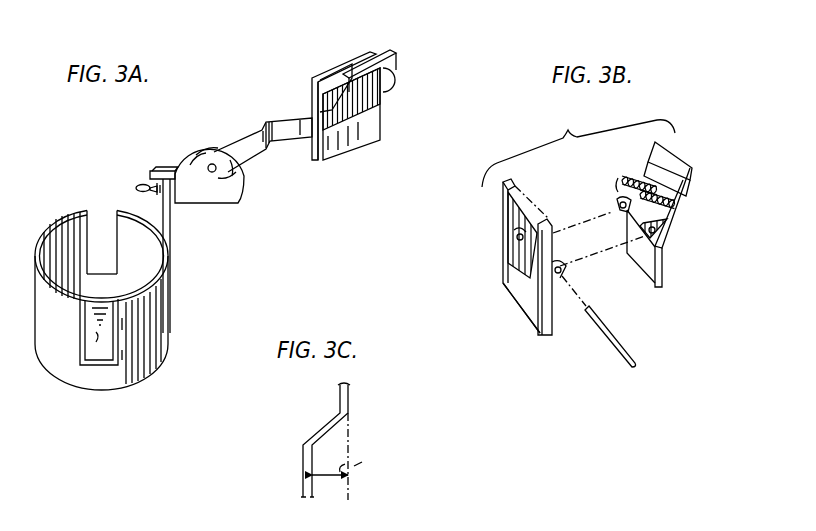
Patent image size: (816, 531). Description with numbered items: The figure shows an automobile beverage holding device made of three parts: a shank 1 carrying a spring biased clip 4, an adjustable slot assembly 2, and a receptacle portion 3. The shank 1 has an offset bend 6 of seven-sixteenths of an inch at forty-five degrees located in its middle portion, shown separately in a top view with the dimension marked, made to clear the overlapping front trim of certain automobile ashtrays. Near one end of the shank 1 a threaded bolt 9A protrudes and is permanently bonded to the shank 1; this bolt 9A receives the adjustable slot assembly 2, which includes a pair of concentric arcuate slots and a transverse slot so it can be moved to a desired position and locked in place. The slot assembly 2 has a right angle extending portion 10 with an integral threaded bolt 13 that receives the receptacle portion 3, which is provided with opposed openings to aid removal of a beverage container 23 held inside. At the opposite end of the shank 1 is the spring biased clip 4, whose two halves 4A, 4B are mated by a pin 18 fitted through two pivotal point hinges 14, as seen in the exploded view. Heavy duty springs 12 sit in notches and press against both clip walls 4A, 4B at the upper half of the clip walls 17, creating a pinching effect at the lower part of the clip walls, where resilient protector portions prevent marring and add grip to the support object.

In FIG. 3A, the shank 1 is at (298, 136).
In FIG. 3C, the shank 1 is at (350, 411).
In FIG. 3A, the adjustable slot assembly 2 is at (222, 202).
In FIG. 3A, the receptacle portion 3 is at (166, 333).
In FIG. 3A, the spring biased clip 4 is at (366, 122).
In FIG. 3A, the clip half 4A is at (357, 71).
In FIG. 3B, the clip half 4A is at (668, 150).
In FIG. 3A, the clip half 4B is at (320, 80).
In FIG. 3B, the clip half 4B is at (503, 240).
In FIG. 3A, the offset bend 6 is at (268, 122).
In FIG. 3C, the offset bend 6 is at (303, 487).
In FIG. 3A, the threaded bolt 9A is at (181, 256).
In FIG. 3A, the right angle extending portion 10 is at (165, 172).
In FIG. 3B, the spring 12 is at (623, 172).
In FIG. 3A, the threaded bolt 13 is at (140, 190).
In FIG. 3B, the pivotal point hinges 14 is at (524, 240).
In FIG. 3B, the upper half of clip walls 17 is at (688, 180).
In FIG. 3B, the pin 18 is at (614, 342).
In FIG. 3A, the beverage container 23 is at (92, 334).